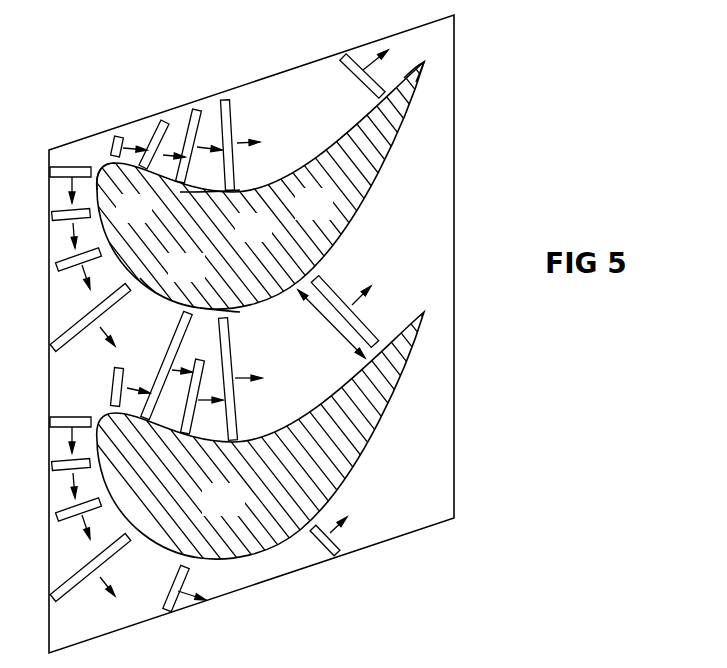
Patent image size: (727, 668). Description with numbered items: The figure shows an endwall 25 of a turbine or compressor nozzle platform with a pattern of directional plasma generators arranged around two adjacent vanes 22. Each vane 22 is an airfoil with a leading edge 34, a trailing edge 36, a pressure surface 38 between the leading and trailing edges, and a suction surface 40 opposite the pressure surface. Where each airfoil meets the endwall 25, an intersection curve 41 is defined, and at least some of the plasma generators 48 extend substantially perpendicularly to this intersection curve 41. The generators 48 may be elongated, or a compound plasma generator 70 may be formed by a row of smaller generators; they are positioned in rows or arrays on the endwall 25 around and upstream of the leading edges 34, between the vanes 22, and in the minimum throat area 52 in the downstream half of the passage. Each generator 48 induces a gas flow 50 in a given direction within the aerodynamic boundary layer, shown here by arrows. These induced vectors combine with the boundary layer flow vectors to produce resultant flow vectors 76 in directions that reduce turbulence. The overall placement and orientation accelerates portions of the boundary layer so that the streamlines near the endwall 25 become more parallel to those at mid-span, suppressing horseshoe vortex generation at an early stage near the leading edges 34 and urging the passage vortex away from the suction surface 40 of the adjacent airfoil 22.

The vane 22 is at (328, 216).
The endwall 25 is at (427, 216).
The leading edge 34 is at (103, 168).
The trailing edge 36 is at (424, 64).
The pressure surface 38 is at (217, 200).
The suction surface 40 is at (213, 307).
The intersection curve 41 is at (155, 292).
The plasma generator 48 is at (225, 333).
The compound plasma generator 70 is at (232, 121).
The gas flow 50 is at (228, 325).
The resultant flow vector 76 is at (255, 140).
The minimum throat area 52 is at (331, 325).